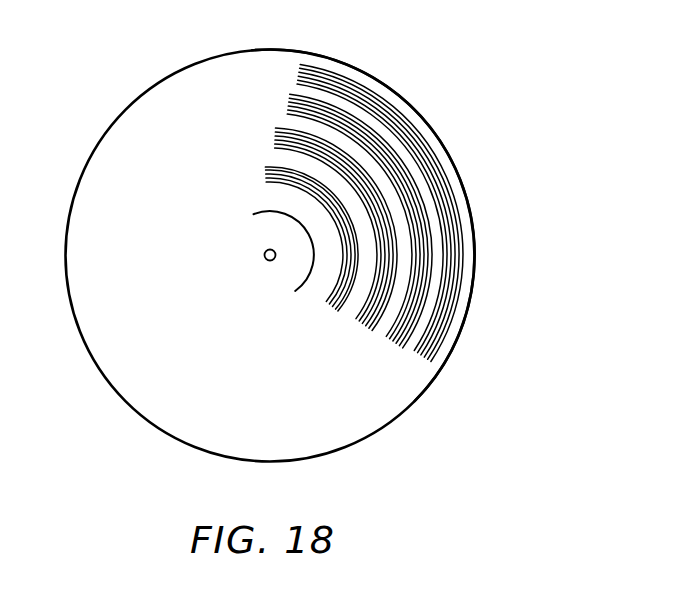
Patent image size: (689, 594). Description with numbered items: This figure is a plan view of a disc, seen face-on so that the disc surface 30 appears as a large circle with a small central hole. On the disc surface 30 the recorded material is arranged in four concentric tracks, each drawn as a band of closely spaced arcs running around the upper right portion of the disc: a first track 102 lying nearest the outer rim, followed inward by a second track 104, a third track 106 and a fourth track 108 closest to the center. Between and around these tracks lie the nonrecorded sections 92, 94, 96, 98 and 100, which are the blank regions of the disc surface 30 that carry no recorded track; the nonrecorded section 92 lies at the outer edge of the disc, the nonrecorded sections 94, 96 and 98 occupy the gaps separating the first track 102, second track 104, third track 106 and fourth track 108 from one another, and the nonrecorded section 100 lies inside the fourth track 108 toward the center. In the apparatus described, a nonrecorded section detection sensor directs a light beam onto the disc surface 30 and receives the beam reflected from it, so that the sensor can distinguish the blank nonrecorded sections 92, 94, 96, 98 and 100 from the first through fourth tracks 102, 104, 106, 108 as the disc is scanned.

The disc surface 30 is at (203, 87).
The nonrecorded section 92 is at (465, 228).
The nonrecorded section 94 is at (426, 187).
The nonrecorded section 96 is at (411, 191).
The nonrecorded section 98 is at (391, 226).
The nonrecorded section 100 is at (411, 293).
The first track 102 is at (313, 80).
The second track 104 is at (342, 115).
The third track 106 is at (353, 165).
The fourth track 108 is at (342, 215).